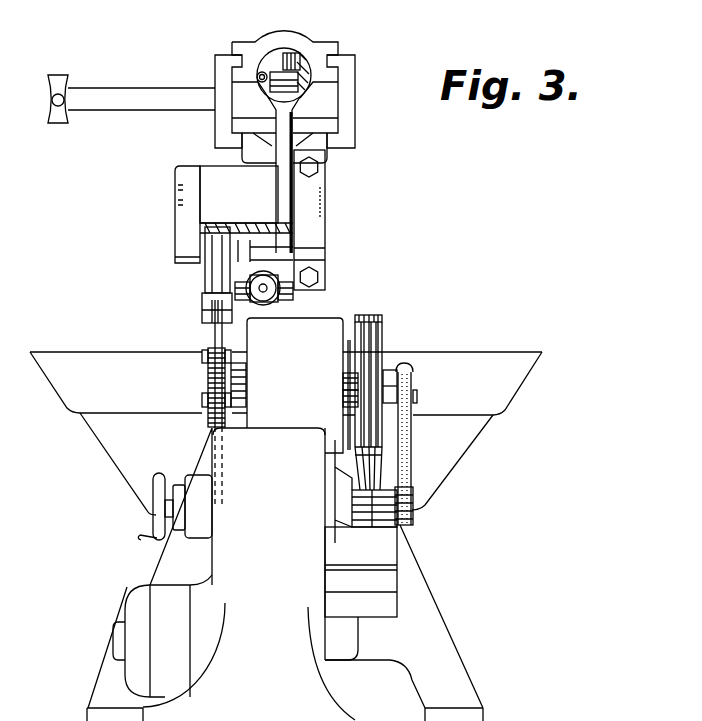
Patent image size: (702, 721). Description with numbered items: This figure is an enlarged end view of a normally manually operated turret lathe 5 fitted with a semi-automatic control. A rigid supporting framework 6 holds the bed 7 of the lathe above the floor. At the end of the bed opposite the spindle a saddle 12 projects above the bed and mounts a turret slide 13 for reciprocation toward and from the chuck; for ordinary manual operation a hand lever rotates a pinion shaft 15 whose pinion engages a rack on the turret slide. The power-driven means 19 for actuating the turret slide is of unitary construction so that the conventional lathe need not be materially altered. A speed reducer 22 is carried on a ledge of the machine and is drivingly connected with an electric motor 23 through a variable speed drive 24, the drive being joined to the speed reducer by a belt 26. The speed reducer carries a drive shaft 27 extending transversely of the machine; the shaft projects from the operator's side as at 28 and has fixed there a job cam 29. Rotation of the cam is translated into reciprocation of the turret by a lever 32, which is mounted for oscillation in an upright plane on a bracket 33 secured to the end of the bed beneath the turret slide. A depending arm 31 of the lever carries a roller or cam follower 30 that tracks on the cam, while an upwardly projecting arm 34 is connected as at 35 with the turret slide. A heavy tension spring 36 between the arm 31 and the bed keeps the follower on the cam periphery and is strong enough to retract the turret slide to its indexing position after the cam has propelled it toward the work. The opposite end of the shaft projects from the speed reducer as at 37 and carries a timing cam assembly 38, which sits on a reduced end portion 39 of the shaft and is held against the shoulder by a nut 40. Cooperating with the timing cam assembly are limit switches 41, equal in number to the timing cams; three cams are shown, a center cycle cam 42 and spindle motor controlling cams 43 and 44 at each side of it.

The turret lathe 5 is at (292, 86).
The supporting framework 6 is at (443, 609).
The bed 7 is at (331, 212).
The saddle 12 is at (212, 125).
The turret slide 13 is at (339, 42).
The pinion shaft 15 is at (150, 85).
The power-driven means 19 is at (408, 392).
The speed reducer 22 is at (298, 333).
The electric motor 23 is at (155, 612).
The variable speed drive 24 is at (224, 468).
The belt 26 is at (417, 454).
The drive shaft 27 is at (344, 381).
The projecting end of drive shaft 28 is at (231, 390).
The cam 29 is at (220, 333).
The roller or cam follower 30 is at (211, 310).
The depending arm 31 is at (205, 273).
The lever 32 is at (233, 218).
The bracket 33 is at (190, 206).
The upwardly projecting arm 34 is at (283, 188).
The connection 35 is at (290, 62).
The tension spring 36 is at (255, 313).
The opposite end of drive shaft 37 is at (345, 395).
The timing cam assembly 38 is at (381, 375).
The reduced end portion 39 is at (396, 358).
The nut 40 is at (385, 363).
The limit switches 41 is at (406, 557).
The cycle cam 42 is at (370, 316).
The spindle motor controlling cam 43 is at (358, 332).
The spindle motor controlling cam 44 is at (388, 320).